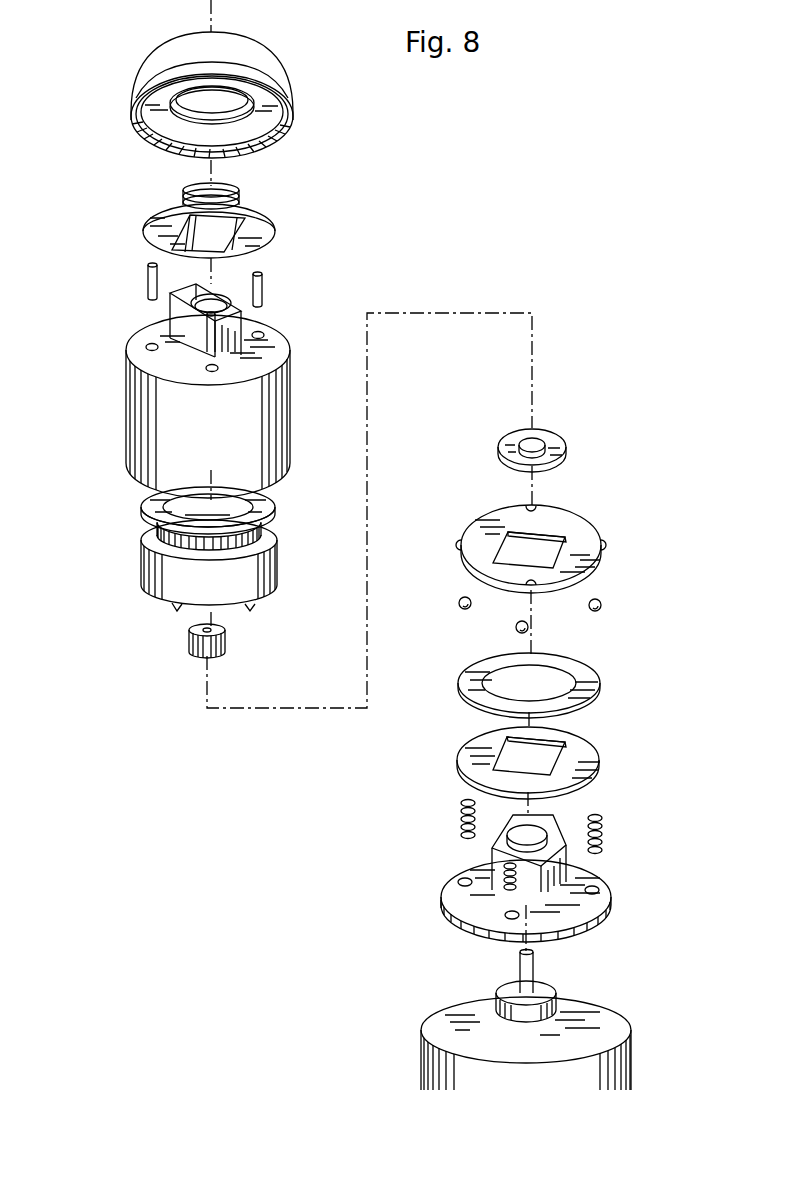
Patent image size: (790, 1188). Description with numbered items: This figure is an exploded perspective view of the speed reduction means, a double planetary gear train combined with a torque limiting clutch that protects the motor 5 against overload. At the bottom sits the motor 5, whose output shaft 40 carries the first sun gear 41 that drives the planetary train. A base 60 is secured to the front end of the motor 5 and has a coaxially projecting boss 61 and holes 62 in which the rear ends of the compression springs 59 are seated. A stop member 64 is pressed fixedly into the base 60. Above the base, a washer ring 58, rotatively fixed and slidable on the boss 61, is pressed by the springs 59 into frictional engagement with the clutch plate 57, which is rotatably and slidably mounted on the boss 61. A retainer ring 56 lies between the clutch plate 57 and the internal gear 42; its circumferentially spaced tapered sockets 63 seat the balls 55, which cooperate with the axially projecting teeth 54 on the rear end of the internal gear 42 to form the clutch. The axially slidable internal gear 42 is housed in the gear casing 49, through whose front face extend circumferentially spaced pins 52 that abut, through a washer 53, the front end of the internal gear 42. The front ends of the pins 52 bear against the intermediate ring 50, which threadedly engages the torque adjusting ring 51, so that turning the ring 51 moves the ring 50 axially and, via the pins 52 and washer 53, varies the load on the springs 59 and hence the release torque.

The motor 5 is at (610, 1027).
The output shaft 40 is at (535, 965).
The first sun gear 41 is at (188, 643).
The internal gear 42 is at (143, 567).
The gear casing 49 is at (288, 343).
The intermediate ring 50 is at (263, 234).
The torque adjusting ring 51 is at (282, 63).
The pins 52 is at (187, 332).
The washer 53 is at (150, 510).
The teeth 54 is at (253, 606).
The balls 55 is at (516, 629).
The retainer ring 56 is at (577, 530).
The clutch plate 57 is at (593, 680).
The washer ring 58 is at (592, 750).
The compression springs 59 is at (508, 893).
The base 60 is at (600, 915).
The boss 61 is at (558, 826).
The holes 62 is at (507, 916).
The sockets 63 is at (602, 548).
The stop member 64 is at (562, 452).